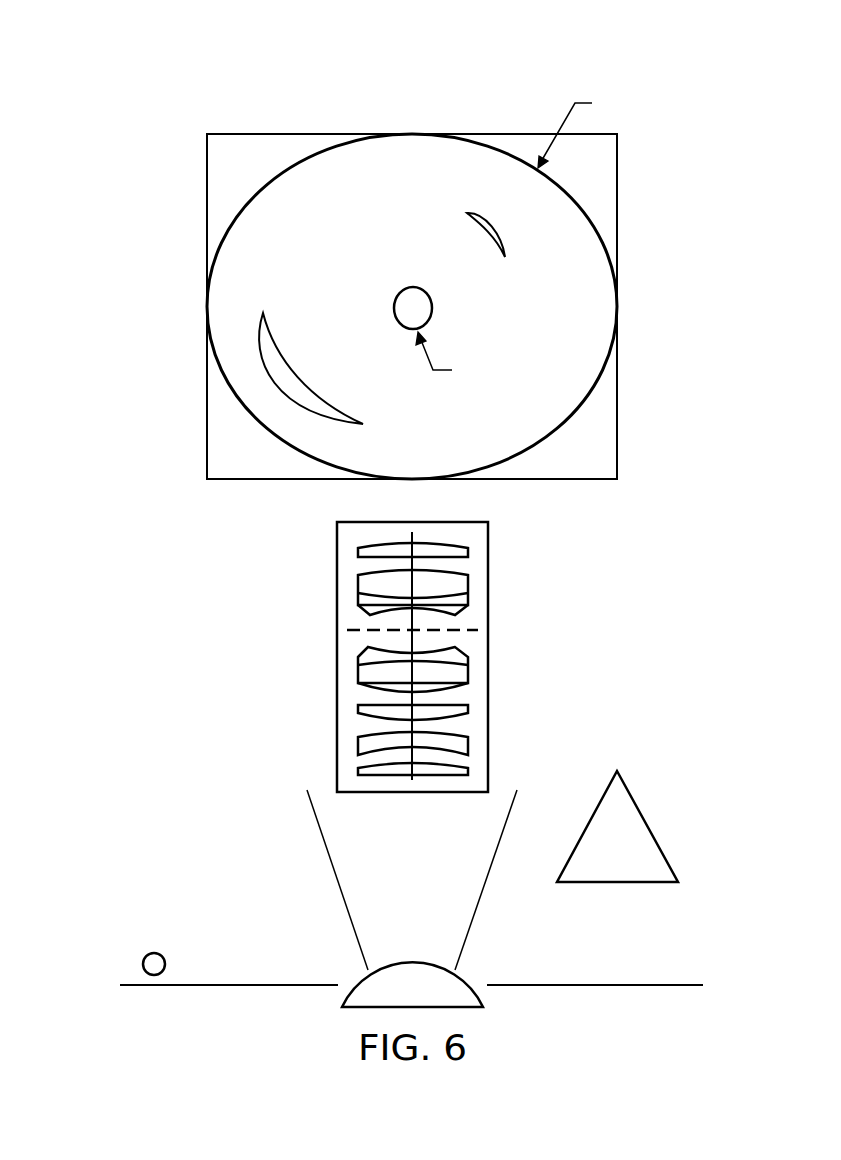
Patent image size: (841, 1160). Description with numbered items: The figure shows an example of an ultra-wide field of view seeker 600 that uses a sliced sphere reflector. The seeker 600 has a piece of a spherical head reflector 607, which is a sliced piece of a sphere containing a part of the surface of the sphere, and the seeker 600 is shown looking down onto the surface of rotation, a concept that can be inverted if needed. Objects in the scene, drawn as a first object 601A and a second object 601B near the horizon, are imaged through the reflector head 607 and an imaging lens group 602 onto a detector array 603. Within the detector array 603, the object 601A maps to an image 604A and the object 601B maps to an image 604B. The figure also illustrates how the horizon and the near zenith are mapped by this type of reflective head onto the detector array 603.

The ultra-wide field of view seeker 600 is at (220, 72).
The detector array 603 is at (207, 208).
The image of object 601A 604A is at (323, 363).
The image of object 601B 604B is at (487, 233).
The imaging lens group 602 is at (337, 657).
The spherical head reflector 607 is at (328, 955).
The object 601A is at (145, 959).
The object 601B is at (615, 882).